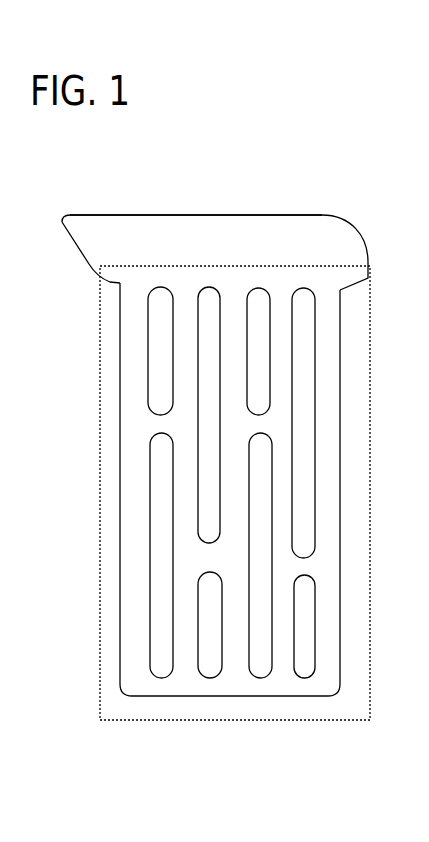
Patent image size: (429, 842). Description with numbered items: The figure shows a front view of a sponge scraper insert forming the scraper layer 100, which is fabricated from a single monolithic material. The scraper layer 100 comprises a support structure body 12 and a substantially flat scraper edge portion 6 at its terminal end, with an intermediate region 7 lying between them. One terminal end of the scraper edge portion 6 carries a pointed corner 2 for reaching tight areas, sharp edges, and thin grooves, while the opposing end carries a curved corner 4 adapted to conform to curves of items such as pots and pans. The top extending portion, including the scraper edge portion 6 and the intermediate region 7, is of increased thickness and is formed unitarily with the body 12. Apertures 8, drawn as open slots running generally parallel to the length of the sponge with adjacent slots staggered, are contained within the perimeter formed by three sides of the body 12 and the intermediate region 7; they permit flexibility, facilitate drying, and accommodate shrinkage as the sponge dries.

The scraper layer 100 is at (97, 152).
The pointed corner 2 is at (78, 214).
The curved corner 4 is at (353, 226).
The scraper edge portion 6 is at (214, 226).
The intermediate region 7 is at (340, 290).
The apertures 8 is at (302, 481).
The support structure body 12 is at (335, 412).